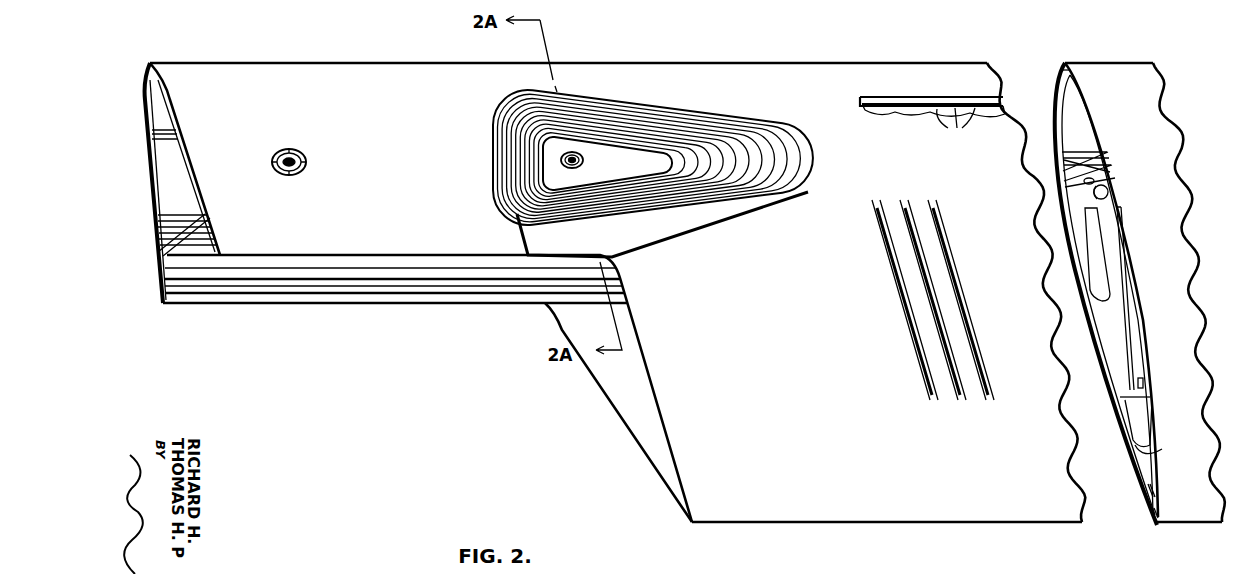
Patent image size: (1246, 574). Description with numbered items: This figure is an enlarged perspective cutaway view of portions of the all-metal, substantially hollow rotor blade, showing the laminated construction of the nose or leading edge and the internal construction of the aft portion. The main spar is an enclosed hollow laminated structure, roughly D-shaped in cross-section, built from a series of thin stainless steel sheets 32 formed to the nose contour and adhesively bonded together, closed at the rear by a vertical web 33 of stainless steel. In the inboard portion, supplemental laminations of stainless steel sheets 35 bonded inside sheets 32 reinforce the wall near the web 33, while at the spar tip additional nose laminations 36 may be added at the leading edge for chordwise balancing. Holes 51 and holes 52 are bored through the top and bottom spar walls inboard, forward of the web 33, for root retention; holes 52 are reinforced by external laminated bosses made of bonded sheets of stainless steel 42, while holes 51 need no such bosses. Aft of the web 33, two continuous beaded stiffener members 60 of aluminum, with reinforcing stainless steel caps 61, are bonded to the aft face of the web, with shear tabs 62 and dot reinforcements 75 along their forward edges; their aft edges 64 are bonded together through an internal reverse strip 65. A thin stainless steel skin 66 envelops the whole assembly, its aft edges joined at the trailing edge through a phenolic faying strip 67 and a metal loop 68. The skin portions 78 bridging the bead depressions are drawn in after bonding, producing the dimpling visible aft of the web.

The stainless steel sheets 32 is at (148, 98).
The vertical web 33 is at (162, 242).
The supplemental laminations of stainless steel sheets 35 is at (190, 179).
The additional nose laminations 36 is at (1060, 70).
The sheets of stainless steel 42 is at (721, 152).
The holes 51 is at (300, 155).
The holes 52 is at (583, 157).
The continuous beaded stiffener members 60 is at (1127, 310).
The reinforcing stainless steel caps 61 is at (1100, 262).
The shear tabs 62 is at (1110, 191).
The aft edges 64 is at (1150, 447).
The internal reverse strip 65 is at (1143, 410).
The skin 66 is at (806, 507).
The faying strip 67 is at (1158, 515).
The metal loop 68 is at (1154, 488).
The dot reinforcements 75 is at (1094, 188).
The skin portions 78 is at (925, 355).